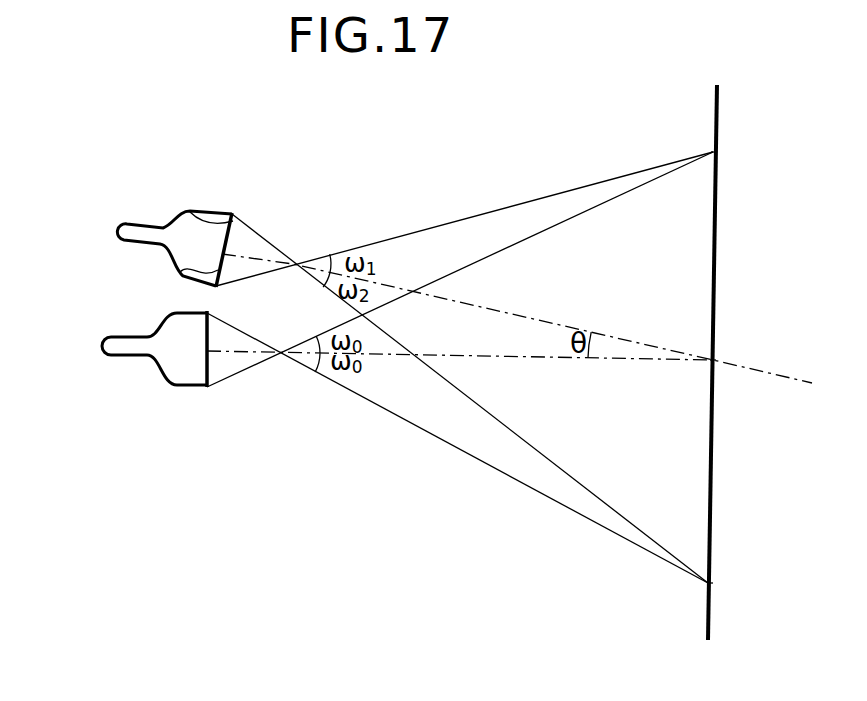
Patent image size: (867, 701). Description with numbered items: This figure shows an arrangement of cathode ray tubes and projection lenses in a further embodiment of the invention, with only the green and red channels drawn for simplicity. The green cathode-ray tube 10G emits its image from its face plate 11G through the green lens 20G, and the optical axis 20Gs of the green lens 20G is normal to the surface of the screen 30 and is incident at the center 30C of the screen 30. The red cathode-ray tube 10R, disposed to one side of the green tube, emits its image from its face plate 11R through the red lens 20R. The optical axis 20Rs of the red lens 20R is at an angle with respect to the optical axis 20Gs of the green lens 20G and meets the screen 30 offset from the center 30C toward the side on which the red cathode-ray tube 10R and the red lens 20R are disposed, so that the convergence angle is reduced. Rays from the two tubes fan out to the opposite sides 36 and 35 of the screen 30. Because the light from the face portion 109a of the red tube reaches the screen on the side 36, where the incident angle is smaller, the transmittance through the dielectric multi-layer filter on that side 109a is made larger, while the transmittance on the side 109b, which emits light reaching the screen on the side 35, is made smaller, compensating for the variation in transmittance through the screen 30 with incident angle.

The red cathode-ray tube 10R is at (148, 218).
The green cathode-ray tube 10G is at (132, 374).
The side of the red cathode-ray tube face emitting light toward screen side 36 109a is at (187, 273).
The side of the red cathode-ray tube face emitting light toward screen side 35 109b is at (190, 212).
The face plate of the red cathode-ray tube 11R is at (230, 213).
The face plate of the green cathode-ray tube 11G is at (205, 390).
The red lens 20R is at (295, 261).
The green lens 20G is at (280, 356).
The optical axis of the red lens 20Rs is at (540, 319).
The optical axis of the green lens 20Gs is at (545, 361).
The screen 30 is at (719, 101).
The center of the screen 30C is at (714, 358).
The side of the screen reached by light from side 109b 35 is at (711, 584).
The side of the screen reached by light from side 109a 36 is at (716, 153).